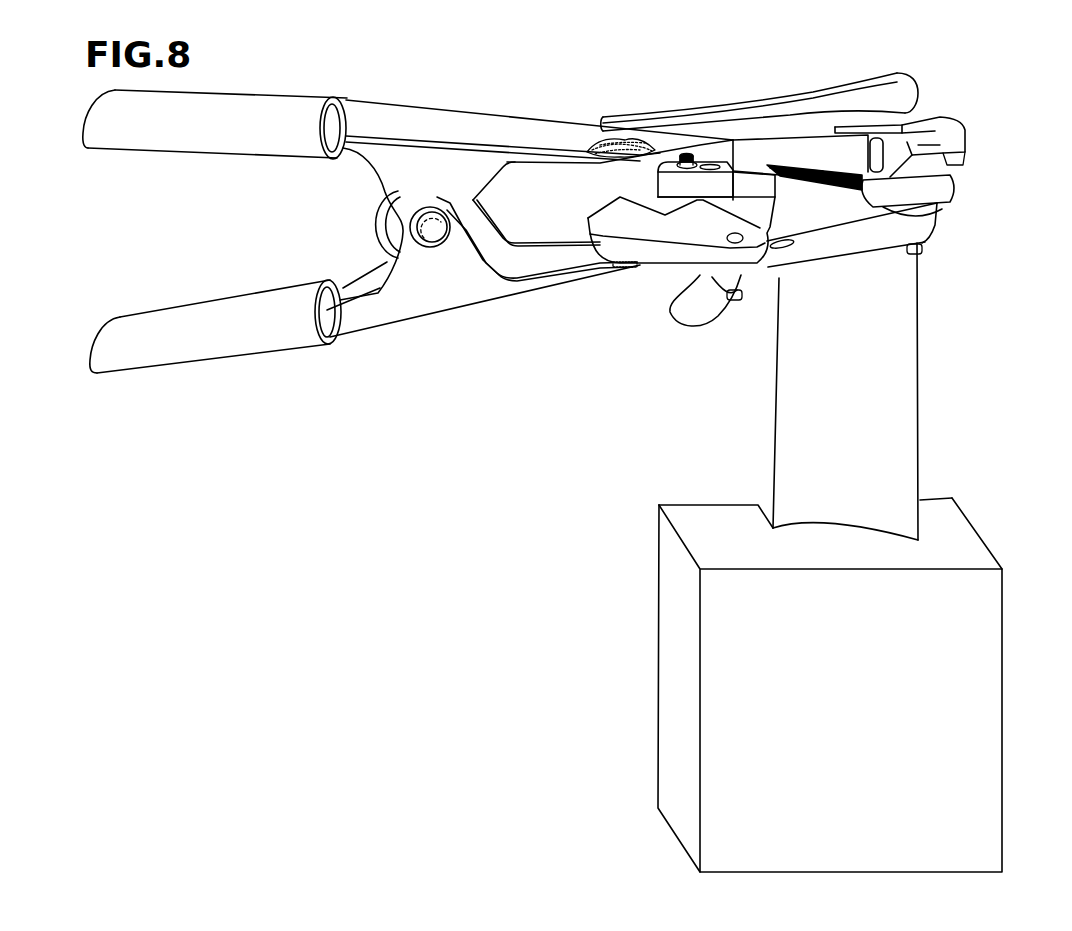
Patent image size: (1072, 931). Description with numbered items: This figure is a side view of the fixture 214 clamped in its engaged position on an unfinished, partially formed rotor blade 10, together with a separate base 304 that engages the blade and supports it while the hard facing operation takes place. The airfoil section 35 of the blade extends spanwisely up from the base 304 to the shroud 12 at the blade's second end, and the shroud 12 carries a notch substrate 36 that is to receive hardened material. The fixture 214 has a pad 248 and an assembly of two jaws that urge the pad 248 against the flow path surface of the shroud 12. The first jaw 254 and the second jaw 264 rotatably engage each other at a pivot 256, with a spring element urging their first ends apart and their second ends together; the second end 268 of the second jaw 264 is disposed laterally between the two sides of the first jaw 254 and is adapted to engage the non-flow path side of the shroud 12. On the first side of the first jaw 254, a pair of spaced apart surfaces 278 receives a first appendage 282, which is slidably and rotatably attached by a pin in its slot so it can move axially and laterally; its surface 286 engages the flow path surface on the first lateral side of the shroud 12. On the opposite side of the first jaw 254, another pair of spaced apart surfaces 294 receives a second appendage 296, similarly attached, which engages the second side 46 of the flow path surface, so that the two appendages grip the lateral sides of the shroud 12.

The rotor blade 10 is at (935, 384).
The shroud 12 is at (935, 120).
The airfoil section 35 is at (866, 387).
The notch substrate 36 is at (930, 148).
The second side 46 is at (955, 160).
The fixture 214 is at (310, 79).
The pad 248 is at (937, 187).
The first jaw 254 is at (446, 321).
The pivot 256 is at (423, 230).
The second jaw 264 is at (418, 98).
The second end 268 is at (897, 73).
The spaced apart surfaces 278 is at (645, 213).
The first appendage 282 is at (714, 165).
The surface 286 is at (742, 173).
The spaced apart surfaces 294 is at (672, 315).
The second appendage 296 is at (840, 255).
The base 304 is at (846, 728).